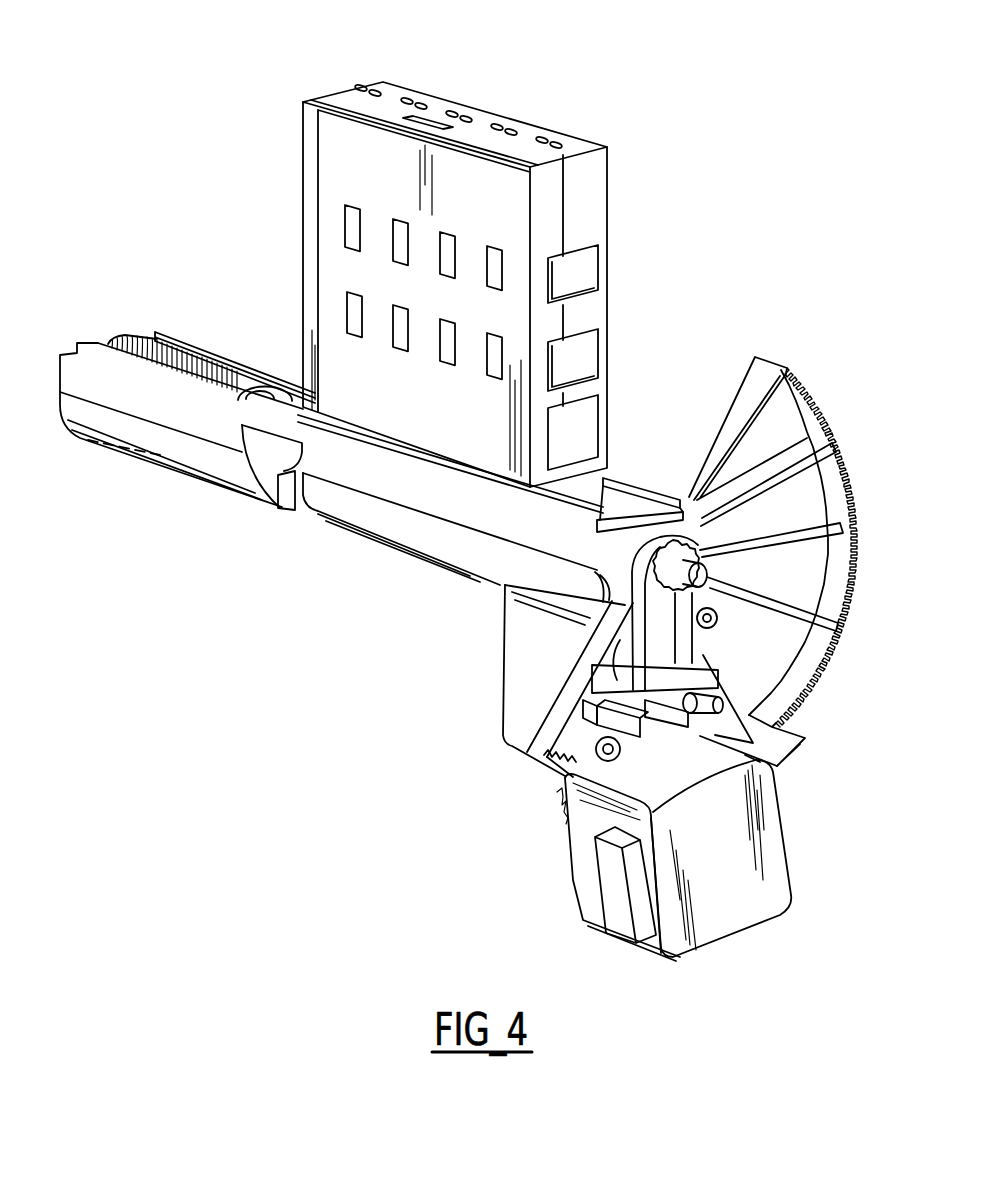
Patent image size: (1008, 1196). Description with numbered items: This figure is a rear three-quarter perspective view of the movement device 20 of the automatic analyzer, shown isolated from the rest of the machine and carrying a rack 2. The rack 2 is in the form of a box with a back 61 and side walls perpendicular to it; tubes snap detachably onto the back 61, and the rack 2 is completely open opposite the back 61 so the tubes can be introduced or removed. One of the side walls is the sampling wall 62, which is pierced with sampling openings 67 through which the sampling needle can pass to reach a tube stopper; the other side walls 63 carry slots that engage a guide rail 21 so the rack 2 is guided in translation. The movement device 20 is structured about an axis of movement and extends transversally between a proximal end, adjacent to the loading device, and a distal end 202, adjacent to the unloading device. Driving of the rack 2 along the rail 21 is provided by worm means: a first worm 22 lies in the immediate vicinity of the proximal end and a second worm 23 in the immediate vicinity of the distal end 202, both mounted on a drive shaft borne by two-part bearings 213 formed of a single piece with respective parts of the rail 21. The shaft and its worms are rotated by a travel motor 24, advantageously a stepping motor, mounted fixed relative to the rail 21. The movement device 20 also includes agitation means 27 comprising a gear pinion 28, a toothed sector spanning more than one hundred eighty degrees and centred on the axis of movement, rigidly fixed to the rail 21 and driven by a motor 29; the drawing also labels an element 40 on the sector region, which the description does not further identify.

The rack 2 is at (301, 180).
The back 61 is at (435, 408).
The sampling wall 62 is at (455, 110).
The side walls 63 is at (600, 205).
The sampling openings 67 is at (578, 136).
The movement device 20 is at (300, 566).
The distal end 202 is at (108, 325).
The second worm 23 is at (135, 340).
The bearings 213 is at (282, 424).
The guide rail 21 is at (574, 510).
The first worm 22 is at (616, 478).
The travel motor 24 is at (505, 680).
The sector gear 40 is at (815, 362).
The gear pinion 28 is at (753, 388).
The agitation means 27 is at (812, 772).
The motor 29 is at (720, 920).